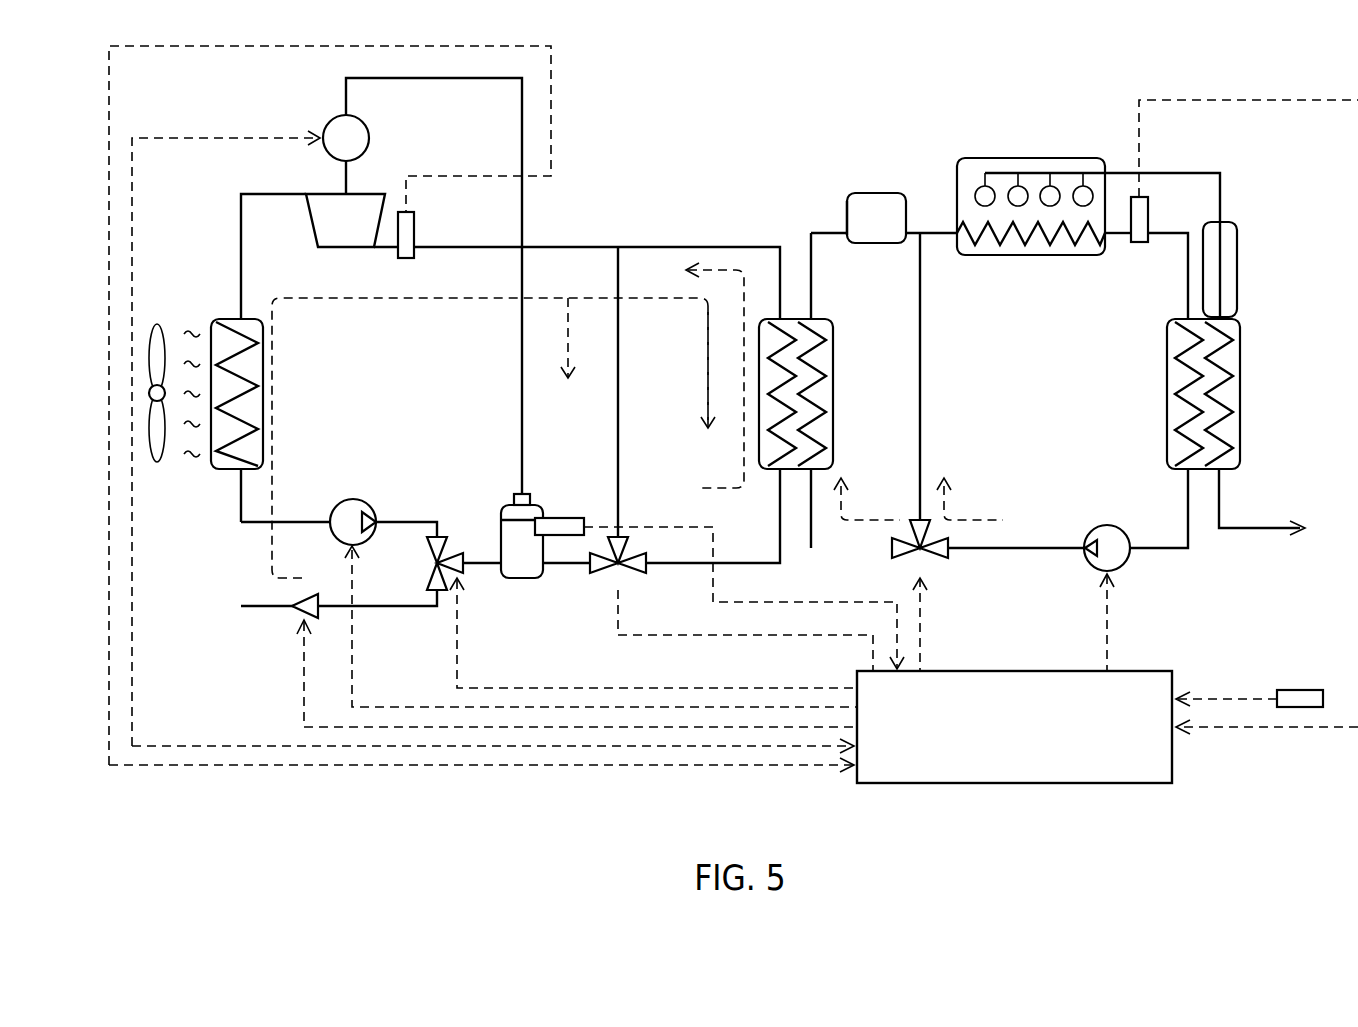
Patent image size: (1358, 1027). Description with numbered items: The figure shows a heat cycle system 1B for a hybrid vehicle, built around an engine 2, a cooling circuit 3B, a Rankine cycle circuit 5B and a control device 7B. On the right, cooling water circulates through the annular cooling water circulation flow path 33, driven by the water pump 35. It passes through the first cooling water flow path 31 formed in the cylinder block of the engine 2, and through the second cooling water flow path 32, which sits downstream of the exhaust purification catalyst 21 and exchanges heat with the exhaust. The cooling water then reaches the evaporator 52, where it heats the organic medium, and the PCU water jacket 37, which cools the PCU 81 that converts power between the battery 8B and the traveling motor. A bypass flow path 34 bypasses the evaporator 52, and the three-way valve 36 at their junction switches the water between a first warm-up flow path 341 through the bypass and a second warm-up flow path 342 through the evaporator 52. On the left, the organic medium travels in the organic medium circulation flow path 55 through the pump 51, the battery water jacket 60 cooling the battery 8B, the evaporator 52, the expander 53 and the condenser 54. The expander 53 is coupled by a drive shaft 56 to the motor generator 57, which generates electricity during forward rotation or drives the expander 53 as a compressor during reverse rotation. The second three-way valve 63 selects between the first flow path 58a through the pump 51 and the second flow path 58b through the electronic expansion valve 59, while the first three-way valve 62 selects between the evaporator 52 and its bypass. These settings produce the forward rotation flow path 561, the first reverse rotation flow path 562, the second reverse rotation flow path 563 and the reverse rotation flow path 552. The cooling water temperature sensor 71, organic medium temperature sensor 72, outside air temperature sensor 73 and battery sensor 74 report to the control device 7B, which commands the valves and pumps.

The heat cycle system 1B is at (1248, 382).
The engine 2 is at (1031, 180).
The cooling circuit 3B is at (1209, 216).
The Rankine cycle circuit 5B is at (481, 409).
The control device 7B is at (1014, 700).
The battery 8B is at (497, 497).
The exhaust purification catalyst 21 is at (1190, 246).
The first cooling water flow path 31 is at (1044, 266).
The second cooling water flow path 32 is at (1236, 427).
The cooling water circulation flow path 33 is at (1016, 520).
The bypass flow path 34 is at (950, 376).
The water pump 35 is at (1135, 570).
The three-way valve 36 is at (942, 595).
The PCU water jacket 37 is at (884, 248).
The pump 51 is at (590, 577).
The evaporator 52 is at (827, 390).
The expander 53 is at (317, 220).
The condenser 54 is at (206, 372).
The organic medium circulation flow path 55 is at (243, 358).
The drive shaft 56 is at (310, 173).
The motor generator 57 is at (422, 286).
The first flow path 58a is at (339, 503).
The second flow path 58b is at (339, 579).
The electronic expansion valve 59 is at (574, 633).
The battery water jacket 60 is at (528, 567).
The first three-way valve 62 is at (731, 459).
The second three-way valve 63 is at (642, 612).
The cooling water temperature sensor 71 is at (1140, 249).
The organic medium temperature sensor 72 is at (383, 251).
The outside air temperature sensor 73 is at (1249, 674).
The battery sensor 74 is at (719, 565).
The PCU 81 is at (818, 212).
The first warm-up flow path 341 is at (970, 481).
The second warm-up flow path 342 is at (867, 481).
The reverse rotation flow path 552 is at (493, 438).
The forward rotation flow path 561 is at (697, 375).
The first reverse rotation flow path 562 is at (553, 364).
The second reverse rotation flow path 563 is at (669, 366).